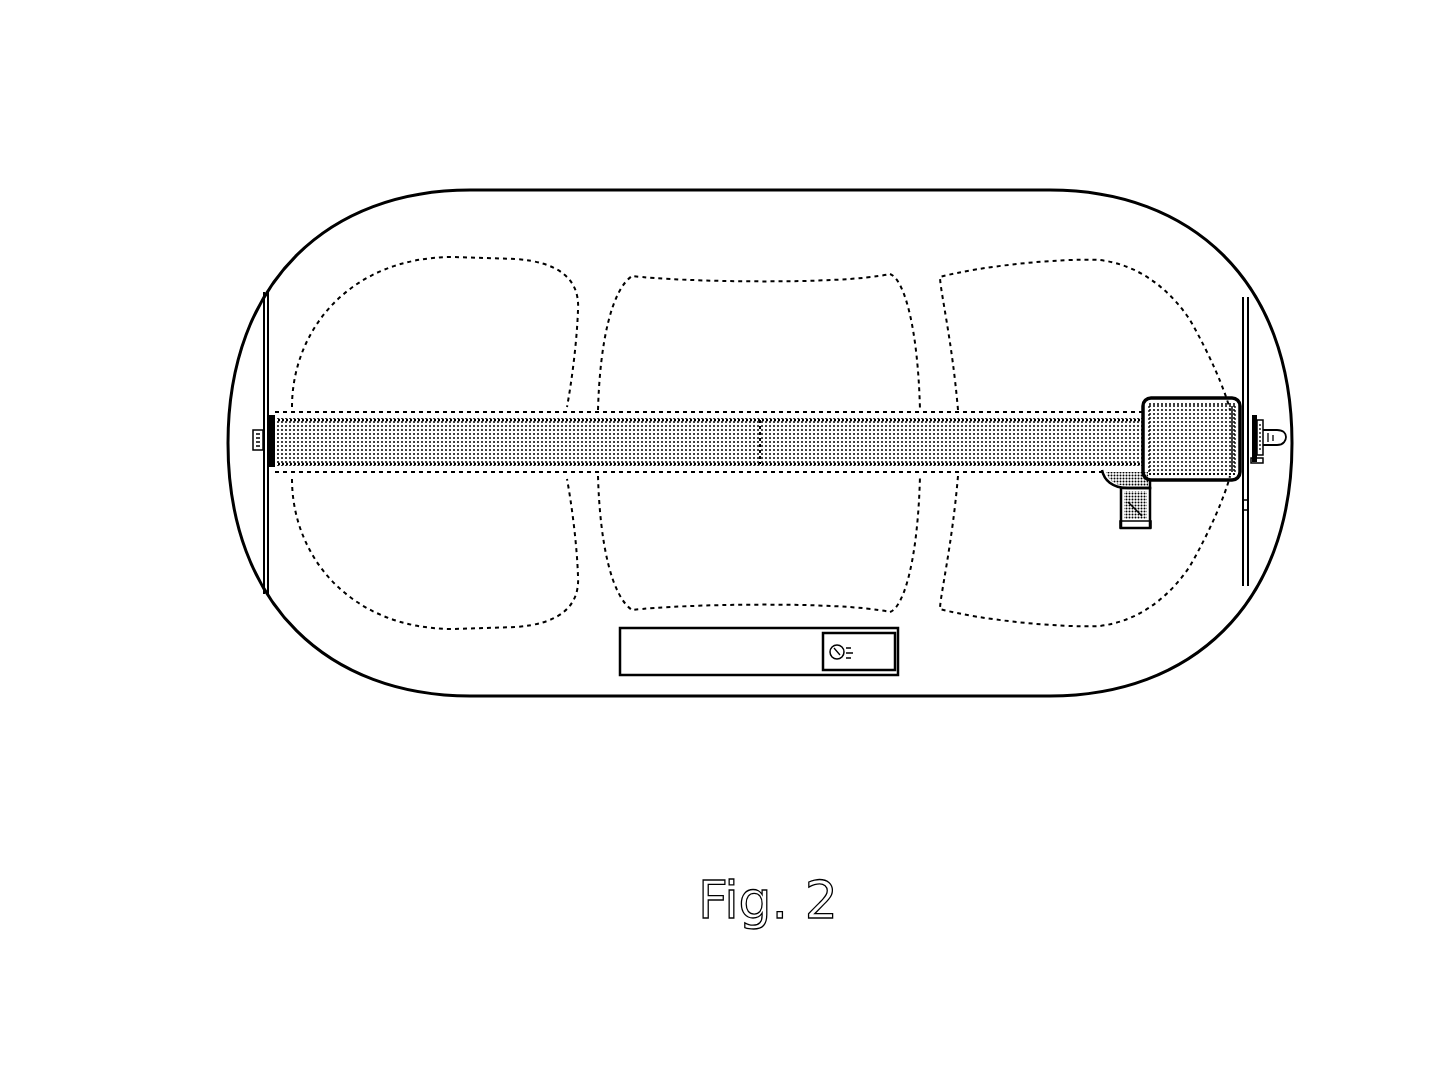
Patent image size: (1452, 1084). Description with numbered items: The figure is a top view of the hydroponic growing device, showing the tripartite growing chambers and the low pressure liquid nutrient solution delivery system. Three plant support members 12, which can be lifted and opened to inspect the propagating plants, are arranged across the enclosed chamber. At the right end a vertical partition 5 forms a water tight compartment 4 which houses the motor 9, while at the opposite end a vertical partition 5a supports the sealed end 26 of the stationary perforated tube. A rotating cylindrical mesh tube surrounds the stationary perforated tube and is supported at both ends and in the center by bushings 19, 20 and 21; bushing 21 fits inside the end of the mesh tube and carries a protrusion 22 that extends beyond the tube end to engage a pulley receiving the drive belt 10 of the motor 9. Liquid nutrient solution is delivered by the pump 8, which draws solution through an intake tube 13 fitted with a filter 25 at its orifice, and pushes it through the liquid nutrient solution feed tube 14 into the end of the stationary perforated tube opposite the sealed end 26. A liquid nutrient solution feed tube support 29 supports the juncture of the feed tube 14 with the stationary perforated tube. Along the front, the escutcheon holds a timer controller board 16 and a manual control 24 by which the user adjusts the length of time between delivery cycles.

The water tight compartment 4 is at (1263, 363).
The vertical partition 5 is at (1250, 318).
The vertical partition 5a is at (262, 565).
The pump 8 is at (1146, 487).
The motor 9 is at (1186, 400).
The drive belt 10 is at (1258, 463).
The plant support members 12 is at (682, 330).
The intake tube 13 is at (1151, 528).
The liquid nutrient solution feed tube 14 is at (1286, 439).
The timer controller board 16 is at (695, 657).
The bushing 19 is at (275, 467).
The bushing 20 is at (757, 411).
The bushing 21 is at (1251, 413).
The protrusion 22 is at (1249, 505).
The manual control 24 is at (842, 660).
The filter 25 is at (1133, 528).
The sealed end 26 is at (253, 433).
The liquid nutrient solution feed tube support 29 is at (1263, 422).